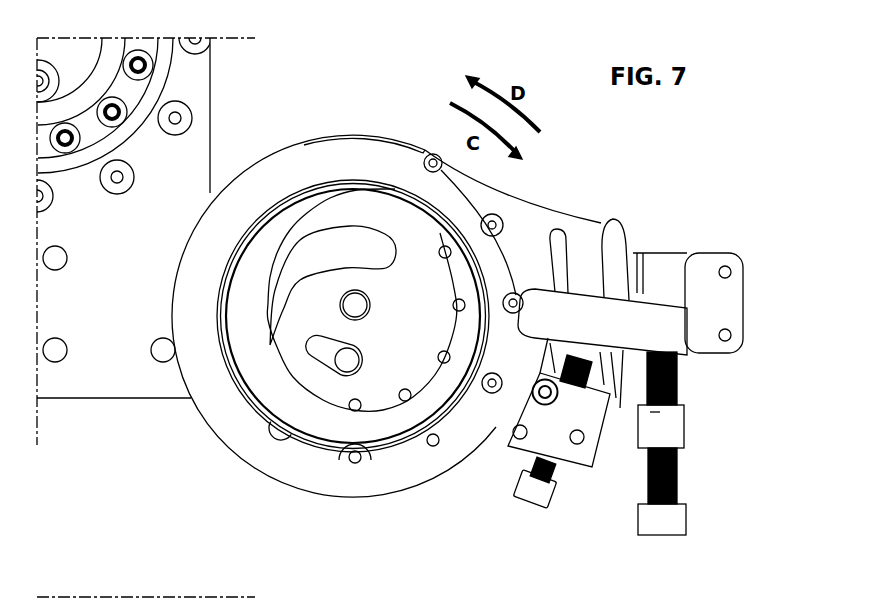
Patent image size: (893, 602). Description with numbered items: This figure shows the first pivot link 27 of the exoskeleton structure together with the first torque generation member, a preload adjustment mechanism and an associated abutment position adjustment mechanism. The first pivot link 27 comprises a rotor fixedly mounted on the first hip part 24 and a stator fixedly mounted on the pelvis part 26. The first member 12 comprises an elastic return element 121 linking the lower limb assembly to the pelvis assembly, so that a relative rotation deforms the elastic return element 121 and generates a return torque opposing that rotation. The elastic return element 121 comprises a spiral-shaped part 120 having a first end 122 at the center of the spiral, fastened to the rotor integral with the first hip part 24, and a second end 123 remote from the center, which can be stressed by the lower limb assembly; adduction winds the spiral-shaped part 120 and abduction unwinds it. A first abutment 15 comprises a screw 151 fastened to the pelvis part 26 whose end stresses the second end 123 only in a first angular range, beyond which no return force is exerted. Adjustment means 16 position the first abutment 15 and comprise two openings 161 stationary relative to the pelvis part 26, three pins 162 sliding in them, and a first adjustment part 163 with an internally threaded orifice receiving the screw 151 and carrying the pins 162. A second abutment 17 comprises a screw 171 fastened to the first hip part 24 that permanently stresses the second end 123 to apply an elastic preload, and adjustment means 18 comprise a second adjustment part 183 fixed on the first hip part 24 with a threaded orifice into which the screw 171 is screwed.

The first member 12 is at (249, 158).
The elastic return element 121 is at (353, 157).
The first end 122 is at (357, 303).
The second end 123 is at (648, 327).
The openings 161 is at (608, 245).
The second abutment 17 is at (663, 353).
The first hip part 24 is at (728, 306).
The first abutment 15 is at (586, 357).
The second adjustment part 183 is at (660, 412).
The adjustment means 18 is at (694, 430).
The screw 171 is at (677, 477).
The first adjustment part 163 is at (600, 414).
The adjustment means 16 is at (592, 461).
The screw 151 is at (554, 471).
The pins 162 is at (573, 443).
The spiral-shaped part 120 is at (358, 478).
The first pivot link 27 is at (232, 457).
The pelvis part 26 is at (107, 360).